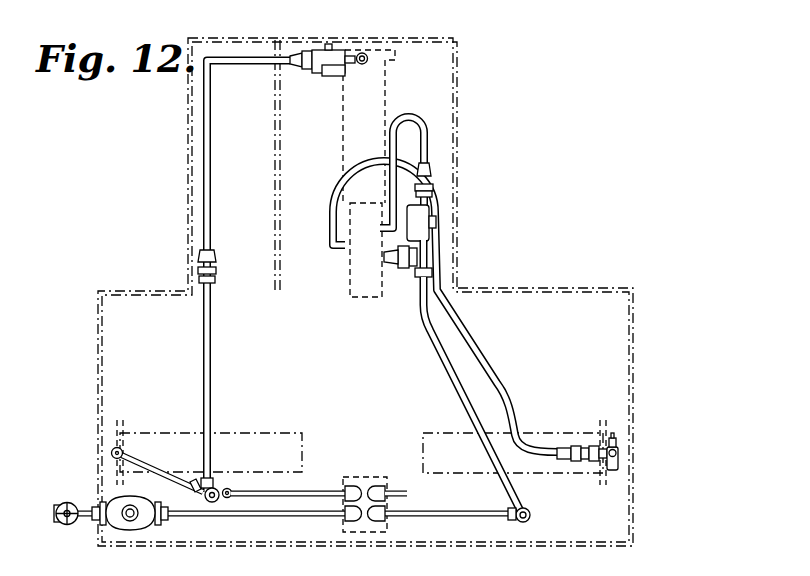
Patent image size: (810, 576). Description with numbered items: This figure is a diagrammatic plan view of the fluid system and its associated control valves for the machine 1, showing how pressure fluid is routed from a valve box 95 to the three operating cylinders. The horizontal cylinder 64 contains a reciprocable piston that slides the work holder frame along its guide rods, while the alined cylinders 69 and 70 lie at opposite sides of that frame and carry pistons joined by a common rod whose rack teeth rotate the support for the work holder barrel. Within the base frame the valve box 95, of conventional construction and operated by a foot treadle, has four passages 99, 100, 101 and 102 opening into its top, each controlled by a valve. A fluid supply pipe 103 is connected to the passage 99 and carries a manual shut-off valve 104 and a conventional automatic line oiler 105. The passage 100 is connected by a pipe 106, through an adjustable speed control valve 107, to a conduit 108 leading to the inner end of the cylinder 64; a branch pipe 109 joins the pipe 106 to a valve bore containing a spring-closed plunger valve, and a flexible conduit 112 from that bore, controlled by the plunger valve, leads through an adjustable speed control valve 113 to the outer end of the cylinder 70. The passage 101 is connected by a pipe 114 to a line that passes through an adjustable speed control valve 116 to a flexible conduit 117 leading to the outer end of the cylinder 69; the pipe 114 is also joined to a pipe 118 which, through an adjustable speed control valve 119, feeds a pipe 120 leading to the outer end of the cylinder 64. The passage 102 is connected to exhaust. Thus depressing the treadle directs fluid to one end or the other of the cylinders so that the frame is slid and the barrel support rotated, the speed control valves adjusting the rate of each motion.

The apparatus housing 1 is at (555, 287).
The horizontal cylinder 64 is at (343, 118).
The cylinder 69 is at (255, 433).
The cylinder 70 is at (553, 432).
The valve box 95 is at (370, 477).
The passage 99 is at (356, 520).
The passage 100 is at (370, 521).
The passage 101 is at (355, 487).
The passage 102 is at (378, 485).
The fluid supply pipe 103 is at (292, 517).
The manual shut-off valve 104 is at (70, 503).
The automatic line oiler 105 is at (118, 525).
The pipe 106 is at (473, 500).
The adjustable speed control valve 107 is at (432, 218).
The conduit 108 is at (426, 130).
The branch pipe 109 is at (397, 263).
The flexible conduit 112 is at (355, 172).
The adjustable speed control valve 113 is at (619, 441).
The pipe 114 is at (327, 480).
The adjustable speed control valve 116 is at (225, 497).
The flexible conduit 117 is at (142, 460).
The pipe 118 is at (208, 205).
The adjustable speed control valve 119 is at (331, 50).
The pipe 120 is at (365, 52).